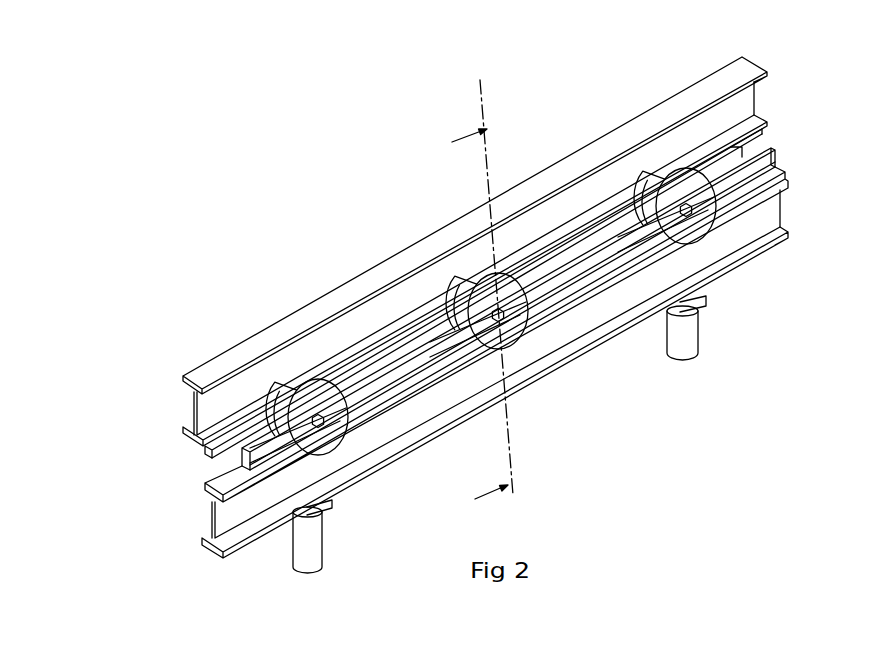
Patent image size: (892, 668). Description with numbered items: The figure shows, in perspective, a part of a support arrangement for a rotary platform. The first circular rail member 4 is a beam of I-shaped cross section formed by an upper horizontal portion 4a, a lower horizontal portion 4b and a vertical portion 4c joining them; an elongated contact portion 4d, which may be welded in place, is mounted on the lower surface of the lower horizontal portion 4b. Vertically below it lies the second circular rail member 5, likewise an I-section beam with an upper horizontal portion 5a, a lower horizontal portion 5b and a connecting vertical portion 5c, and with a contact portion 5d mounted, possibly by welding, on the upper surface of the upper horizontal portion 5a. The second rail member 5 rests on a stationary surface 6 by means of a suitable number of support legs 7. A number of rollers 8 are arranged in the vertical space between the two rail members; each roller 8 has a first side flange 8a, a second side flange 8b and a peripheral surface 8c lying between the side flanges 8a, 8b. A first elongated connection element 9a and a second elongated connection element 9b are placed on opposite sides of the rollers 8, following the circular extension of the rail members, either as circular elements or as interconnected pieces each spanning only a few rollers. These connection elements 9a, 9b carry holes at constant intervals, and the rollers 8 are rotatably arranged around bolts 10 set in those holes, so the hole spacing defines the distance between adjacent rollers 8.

The first circular rail member 4 is at (237, 360).
The upper horizontal portion 4a is at (287, 330).
The lower horizontal portion 4b is at (187, 428).
The vertical portion 4c is at (190, 403).
The elongated contact portion 4d is at (185, 444).
The second circular rail member 5 is at (368, 442).
The upper horizontal portion 5a is at (205, 493).
The lower horizontal portion 5b is at (253, 530).
The vertical portion 5c is at (208, 545).
The contact portion 5d is at (207, 490).
The stationary surface 6 is at (608, 478).
The support legs 7 is at (686, 335).
The rollers 8 is at (510, 280).
The first side flange 8a is at (517, 327).
The second side flange 8b is at (433, 320).
The peripheral surface 8c is at (458, 308).
The first elongated connection element 9a is at (607, 257).
The second elongated connection element 9b is at (718, 163).
The bolts 10 is at (498, 320).